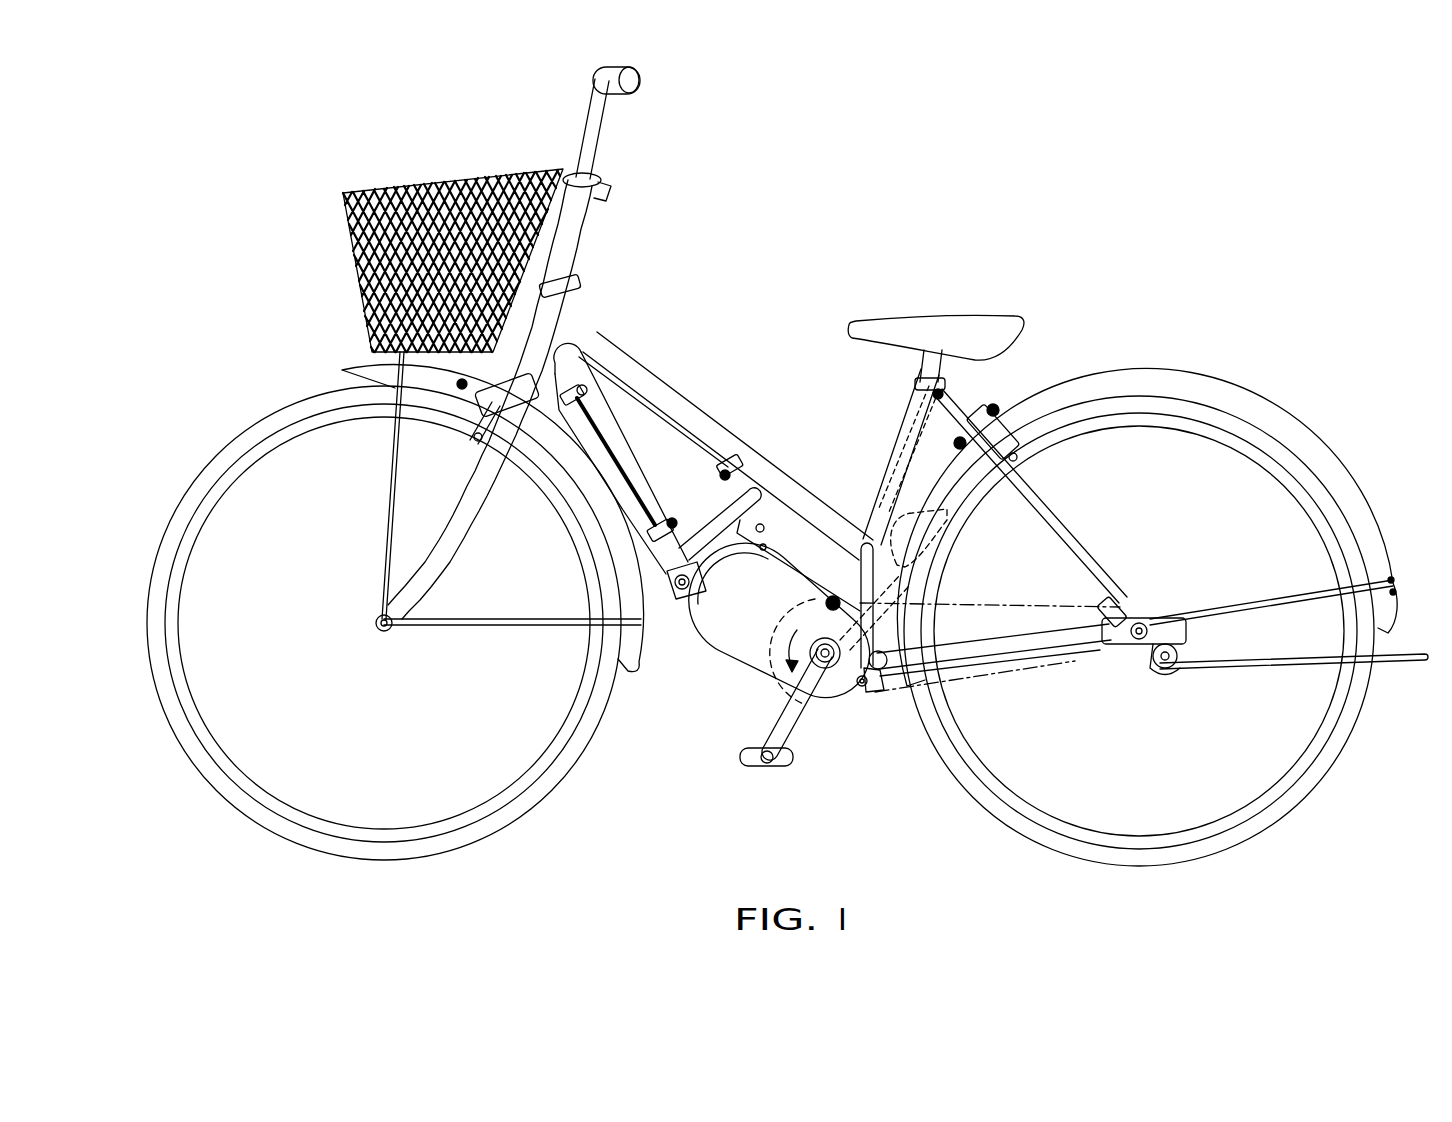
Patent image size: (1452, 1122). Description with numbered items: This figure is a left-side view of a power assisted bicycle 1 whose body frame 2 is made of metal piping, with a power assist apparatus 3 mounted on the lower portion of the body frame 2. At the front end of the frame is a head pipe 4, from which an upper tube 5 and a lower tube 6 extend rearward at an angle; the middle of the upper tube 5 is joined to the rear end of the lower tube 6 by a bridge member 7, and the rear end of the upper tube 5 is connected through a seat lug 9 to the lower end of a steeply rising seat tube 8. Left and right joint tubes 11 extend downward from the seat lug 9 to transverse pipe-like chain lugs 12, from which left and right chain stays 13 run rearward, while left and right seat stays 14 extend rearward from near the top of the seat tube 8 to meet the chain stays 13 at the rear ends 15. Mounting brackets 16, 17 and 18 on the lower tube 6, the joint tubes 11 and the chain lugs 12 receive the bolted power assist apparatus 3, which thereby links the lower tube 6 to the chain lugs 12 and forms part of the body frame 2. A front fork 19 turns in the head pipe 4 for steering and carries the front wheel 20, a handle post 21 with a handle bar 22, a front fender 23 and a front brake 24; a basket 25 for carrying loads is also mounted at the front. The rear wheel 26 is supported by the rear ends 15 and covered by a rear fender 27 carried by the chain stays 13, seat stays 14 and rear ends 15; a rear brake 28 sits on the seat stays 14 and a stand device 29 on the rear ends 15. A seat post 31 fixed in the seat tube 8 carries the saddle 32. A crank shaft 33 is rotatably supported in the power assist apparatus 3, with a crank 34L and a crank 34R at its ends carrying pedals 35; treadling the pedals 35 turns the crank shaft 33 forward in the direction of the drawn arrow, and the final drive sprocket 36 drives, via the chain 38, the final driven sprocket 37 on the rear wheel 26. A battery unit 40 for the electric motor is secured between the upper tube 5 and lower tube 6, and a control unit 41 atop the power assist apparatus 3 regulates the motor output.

The power assisted bicycle 1 is at (790, 165).
The body frame 2 is at (712, 410).
The power assist apparatus 3 is at (712, 655).
The head pipe 4 is at (560, 333).
The upper tube 5 is at (593, 338).
The lower tube 6 is at (603, 337).
The bridge member 7 is at (755, 490).
The seat tube 8 is at (897, 432).
The seat lug 9 is at (858, 545).
The joint tubes 11 is at (910, 622).
The chain lugs 12 is at (935, 673).
The chain stays 13 is at (1020, 655).
The seat stays 14 is at (1062, 540).
The rear ends 15 is at (1128, 600).
The mounting bracket 16 is at (673, 592).
The mounting bracket 17 is at (905, 593).
The mounting bracket 18 is at (878, 682).
The front fork 19 is at (460, 508).
The front wheel 20 is at (210, 461).
The handle post 21 is at (603, 222).
The handle bar 22 is at (603, 133).
The front fender 23 is at (352, 366).
The front brake 24 is at (470, 407).
The basket 25 is at (415, 185).
The rear wheel 26 is at (950, 790).
The rear fender 27 is at (1180, 370).
The rear brake 28 is at (990, 398).
The stand device 29 is at (1255, 662).
The seat post 31 is at (920, 360).
The saddle 32 is at (947, 315).
The crank shaft 33 is at (823, 700).
The crank 34L is at (778, 720).
The crank 34R is at (933, 567).
The pedals 35 is at (745, 768).
The final drive sprocket 36 is at (838, 700).
The final driven sprocket 37 is at (1148, 672).
The chain 38 is at (1073, 663).
The battery unit 40 is at (626, 432).
The control unit 41 is at (802, 542).